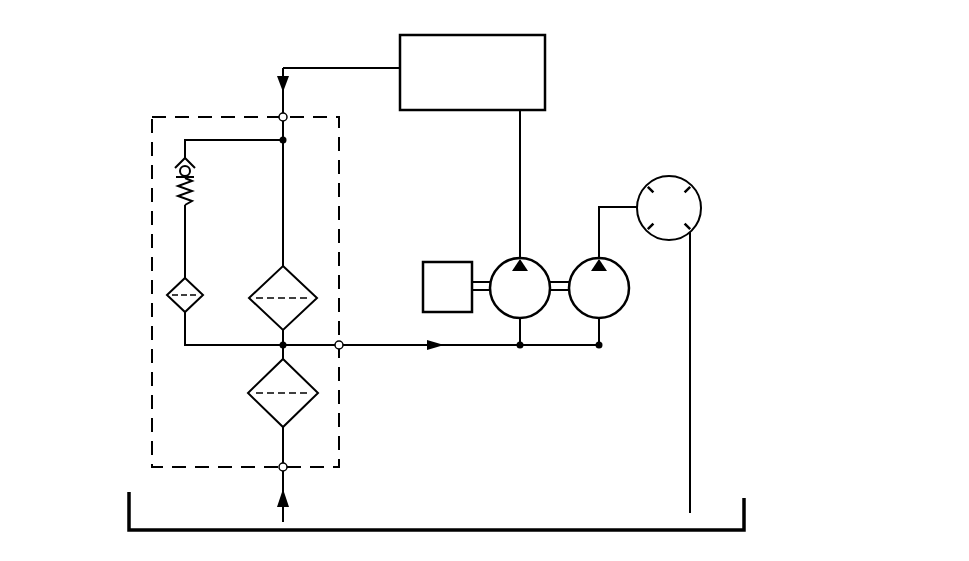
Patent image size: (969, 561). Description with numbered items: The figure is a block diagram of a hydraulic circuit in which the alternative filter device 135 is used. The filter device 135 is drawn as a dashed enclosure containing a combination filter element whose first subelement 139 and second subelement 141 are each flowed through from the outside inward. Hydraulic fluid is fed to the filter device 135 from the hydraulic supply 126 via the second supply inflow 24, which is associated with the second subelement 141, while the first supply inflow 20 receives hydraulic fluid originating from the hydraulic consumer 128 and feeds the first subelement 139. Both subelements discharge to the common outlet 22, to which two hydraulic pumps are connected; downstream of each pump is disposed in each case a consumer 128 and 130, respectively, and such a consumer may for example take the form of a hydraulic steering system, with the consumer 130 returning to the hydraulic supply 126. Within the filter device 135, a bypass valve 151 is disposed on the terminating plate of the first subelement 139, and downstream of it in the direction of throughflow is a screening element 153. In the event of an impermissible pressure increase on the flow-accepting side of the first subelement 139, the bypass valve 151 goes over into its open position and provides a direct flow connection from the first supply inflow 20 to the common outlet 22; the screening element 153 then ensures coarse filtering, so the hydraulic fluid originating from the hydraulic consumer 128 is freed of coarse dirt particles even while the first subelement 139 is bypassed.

The filter device 135 is at (152, 108).
The bypass valve 151 is at (170, 169).
The screening element 153 is at (177, 282).
The first subelement 139 is at (304, 277).
The second subelement 141 is at (318, 404).
The first supply inflow 20 is at (285, 113).
The common outlet 22 is at (341, 341).
The second supply inflow 24 is at (286, 471).
The hydraulic consumer 128 is at (530, 62).
The hydraulic consumer 130 is at (667, 192).
The hydraulic supply 126 is at (692, 530).